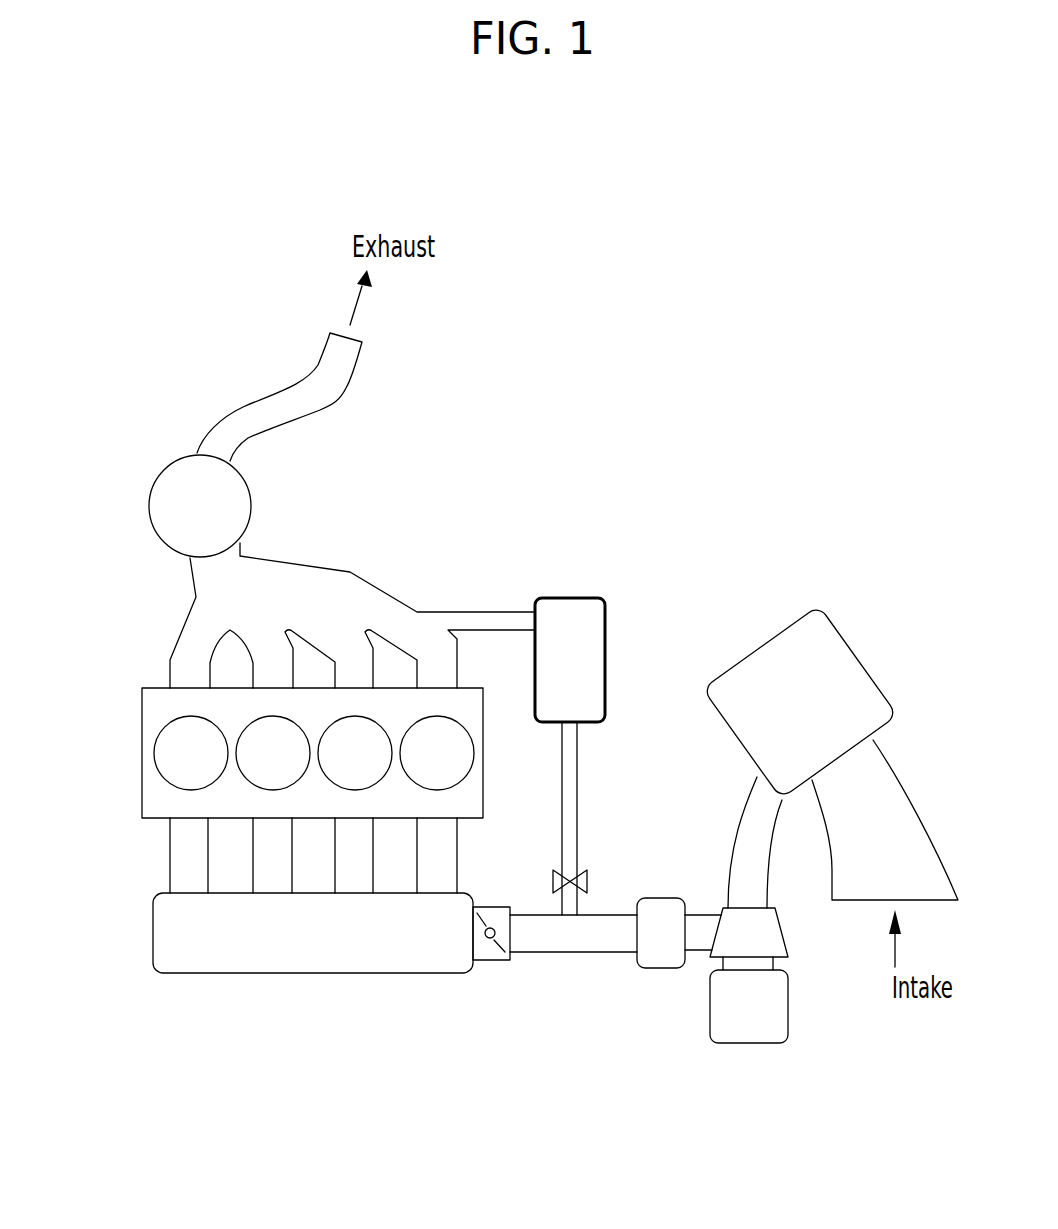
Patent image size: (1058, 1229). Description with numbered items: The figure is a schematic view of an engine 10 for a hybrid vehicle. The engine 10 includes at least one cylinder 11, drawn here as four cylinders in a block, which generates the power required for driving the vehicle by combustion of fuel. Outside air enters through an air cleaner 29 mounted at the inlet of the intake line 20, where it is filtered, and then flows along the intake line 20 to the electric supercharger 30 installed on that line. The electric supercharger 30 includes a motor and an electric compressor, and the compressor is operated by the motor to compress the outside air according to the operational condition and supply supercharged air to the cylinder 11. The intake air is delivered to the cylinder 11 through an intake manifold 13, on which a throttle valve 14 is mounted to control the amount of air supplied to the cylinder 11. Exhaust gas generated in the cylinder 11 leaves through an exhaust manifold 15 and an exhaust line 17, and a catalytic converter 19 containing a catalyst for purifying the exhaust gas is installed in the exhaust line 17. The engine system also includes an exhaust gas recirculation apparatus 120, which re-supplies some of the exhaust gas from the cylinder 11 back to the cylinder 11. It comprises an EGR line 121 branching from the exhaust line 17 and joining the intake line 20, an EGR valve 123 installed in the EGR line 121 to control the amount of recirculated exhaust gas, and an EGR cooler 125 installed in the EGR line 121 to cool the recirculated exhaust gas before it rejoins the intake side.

The engine 10 is at (262, 788).
The cylinder 11 is at (167, 725).
The intake manifold 13 is at (153, 930).
The throttle valve 14 is at (492, 962).
The exhaust manifold 15 is at (183, 627).
The exhaust line 17 is at (343, 393).
The catalytic converter 19 is at (157, 472).
The intake line 20 is at (740, 815).
The air cleaner 29 is at (855, 641).
The electric supercharger 30 is at (830, 1040).
The exhaust gas recirculation apparatus 120 is at (662, 616).
The EGR line 121 is at (578, 846).
The EGR valve 123 is at (587, 882).
The EGR cooler 125 is at (567, 598).